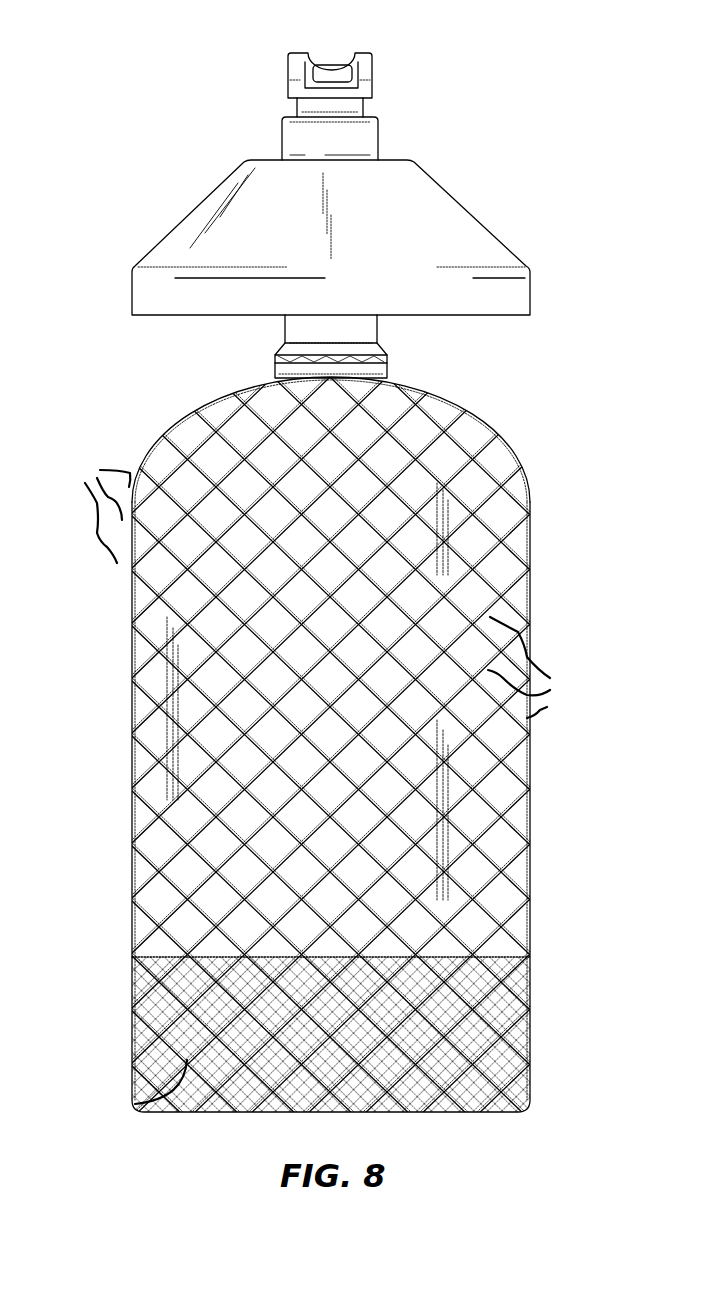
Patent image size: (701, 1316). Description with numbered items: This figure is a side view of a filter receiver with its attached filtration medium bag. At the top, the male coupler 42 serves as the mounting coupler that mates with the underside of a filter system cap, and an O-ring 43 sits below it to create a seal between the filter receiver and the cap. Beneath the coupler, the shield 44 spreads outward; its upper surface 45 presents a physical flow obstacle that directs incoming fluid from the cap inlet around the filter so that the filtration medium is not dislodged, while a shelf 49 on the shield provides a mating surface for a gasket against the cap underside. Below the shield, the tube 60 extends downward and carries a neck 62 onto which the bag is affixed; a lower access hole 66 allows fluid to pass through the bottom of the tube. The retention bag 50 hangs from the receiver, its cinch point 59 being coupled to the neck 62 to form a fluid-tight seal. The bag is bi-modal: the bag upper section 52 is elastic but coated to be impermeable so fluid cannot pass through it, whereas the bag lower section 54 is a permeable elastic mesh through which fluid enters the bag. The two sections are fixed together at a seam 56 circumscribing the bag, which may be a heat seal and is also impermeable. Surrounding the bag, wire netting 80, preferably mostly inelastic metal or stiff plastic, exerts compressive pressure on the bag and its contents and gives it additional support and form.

The male coupler 42 is at (373, 67).
The O-ring 43 is at (368, 110).
The shelf 49 is at (400, 160).
The shield 44 is at (473, 212).
The upper surface 45 is at (407, 233).
The tube 60 is at (272, 322).
The lower access hole 66 is at (387, 352).
The cinch point 59 is at (388, 368).
The neck 62 is at (450, 375).
The retention bag 50 is at (107, 658).
The bag upper section 52 is at (346, 748).
The bag lower section 54 is at (531, 1057).
The seam 56 is at (322, 957).
The wire netting 80 is at (133, 1103).